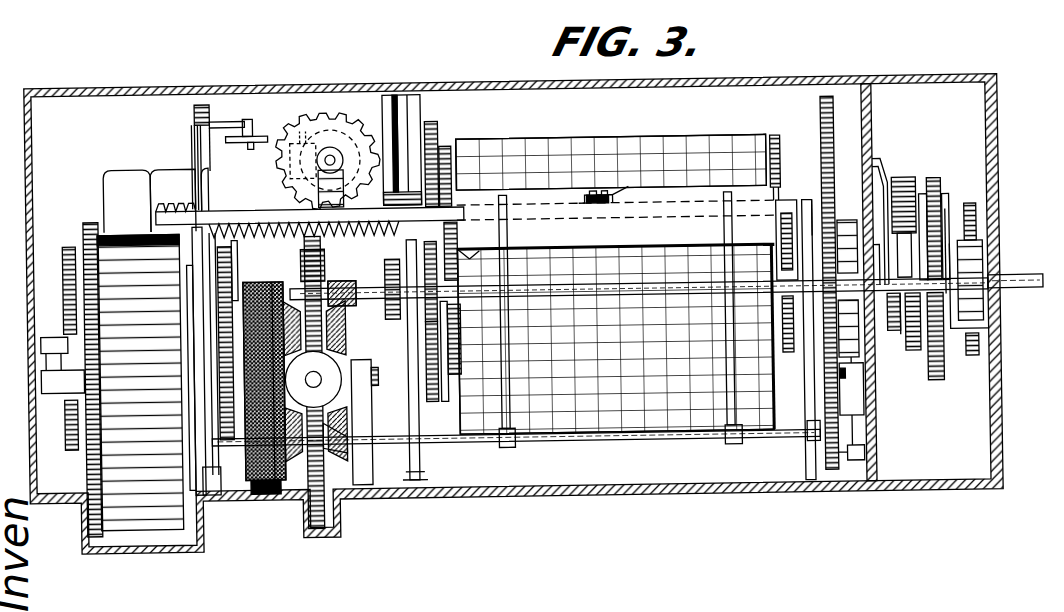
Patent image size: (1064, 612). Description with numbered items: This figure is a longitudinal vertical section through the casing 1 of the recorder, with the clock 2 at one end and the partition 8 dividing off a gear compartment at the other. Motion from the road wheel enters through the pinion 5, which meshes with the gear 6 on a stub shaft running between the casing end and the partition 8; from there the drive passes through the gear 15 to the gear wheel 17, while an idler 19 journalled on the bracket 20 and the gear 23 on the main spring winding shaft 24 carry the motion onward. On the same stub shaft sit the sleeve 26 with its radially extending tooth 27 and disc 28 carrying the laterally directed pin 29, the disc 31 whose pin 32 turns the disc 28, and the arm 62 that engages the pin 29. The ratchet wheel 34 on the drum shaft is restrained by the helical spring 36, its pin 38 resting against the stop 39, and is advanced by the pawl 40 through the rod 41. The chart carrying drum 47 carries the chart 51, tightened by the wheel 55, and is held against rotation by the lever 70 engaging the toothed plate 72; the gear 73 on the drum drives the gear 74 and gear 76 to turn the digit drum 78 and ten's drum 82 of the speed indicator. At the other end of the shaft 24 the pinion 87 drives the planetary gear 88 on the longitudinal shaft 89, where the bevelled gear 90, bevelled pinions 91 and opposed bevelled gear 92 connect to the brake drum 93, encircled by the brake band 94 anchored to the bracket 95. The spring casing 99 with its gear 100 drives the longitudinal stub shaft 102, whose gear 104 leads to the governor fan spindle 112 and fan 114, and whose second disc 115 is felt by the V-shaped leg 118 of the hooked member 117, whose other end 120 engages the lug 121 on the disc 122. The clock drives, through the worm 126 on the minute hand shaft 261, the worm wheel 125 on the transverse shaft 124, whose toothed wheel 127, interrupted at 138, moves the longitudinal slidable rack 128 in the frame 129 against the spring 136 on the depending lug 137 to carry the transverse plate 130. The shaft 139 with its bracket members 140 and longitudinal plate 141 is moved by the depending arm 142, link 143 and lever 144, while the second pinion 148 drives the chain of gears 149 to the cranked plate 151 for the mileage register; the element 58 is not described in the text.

The casing 1 is at (447, 488).
The clock 2 is at (212, 96).
The pinion 5 is at (978, 268).
The gear 6 is at (970, 363).
The partition 8 is at (874, 120).
The gear 15 is at (975, 240).
The gear wheel 17 is at (937, 184).
The idler 19 is at (905, 184).
The bracket 20 is at (882, 182).
The gear 23 is at (950, 218).
The main spring winding shaft 24 is at (353, 303).
The sleeve 26 is at (823, 300).
The radially extending tooth 27 is at (826, 245).
The disc 28 is at (893, 336).
The laterally directed pin 29 is at (950, 205).
The disc 31 is at (912, 356).
The laterally extending pin 32 is at (901, 345).
The ratchet wheel 34 is at (836, 112).
The helical spring 36 is at (849, 224).
The pin 38 is at (855, 450).
The stop 39 is at (862, 458).
The pawl 40 is at (851, 401).
The rod 41 is at (845, 378).
The chart carrying drum 47 is at (775, 139).
The chart 51 is at (712, 138).
The wheel 55 is at (782, 145).
The pinion 58 is at (792, 356).
The arm 62 is at (928, 215).
The lever 70 is at (452, 405).
The toothed plate 72 is at (438, 361).
The gear 73 is at (466, 262).
The gear 74 is at (450, 148).
The gear 76 is at (435, 122).
The digit drum 78 is at (437, 88).
The ten's drum 82 is at (404, 93).
The pinion 87 is at (325, 266).
The planetary gear 88 is at (338, 360).
The longitudinal shaft 89 is at (372, 383).
The bevelled gear 90 is at (345, 438).
The bevelled pinions 91 is at (320, 373).
The opposed bevelled gear 92 is at (346, 334).
The brake drum 93 is at (300, 462).
The brake band 94 is at (272, 282).
The bracket 95 is at (260, 490).
The spring casing 99 is at (125, 232).
The gear 100 is at (90, 218).
The longitudinal stub shaft 102 is at (40, 340).
The gear 104 is at (63, 270).
The governor fan spindle 112 is at (168, 164).
The fan 114 is at (128, 170).
The second disc 115 is at (217, 245).
The hooked member 117 is at (197, 112).
The V-shaped leg 118 is at (194, 150).
The other end 120 is at (232, 117).
The lug 121 is at (225, 135).
The disc 122 is at (255, 145).
The transverse shaft 124 is at (345, 175).
The worm wheel 125 is at (340, 142).
The worm 126 is at (285, 180).
The toothed wheel 127 is at (345, 155).
The longitudinal slidable rack 128 is at (262, 120).
The frame 129 is at (220, 205).
The transverse plate 130 is at (604, 192).
The spring 136 is at (240, 278).
The depending lug 137 is at (458, 228).
The interrupted teeth 138 is at (396, 93).
The shaft 139 is at (472, 442).
The bracket members 140 is at (728, 447).
The longitudinal plate 141 is at (617, 317).
The depending arm 142 is at (206, 488).
The link 143 is at (205, 462).
The lever 144 is at (218, 440).
The second pinion 148 is at (378, 282).
The chain of gears 149 is at (416, 440).
The cranked plate 151 is at (428, 350).
The minute hand shaft 261 is at (302, 120).